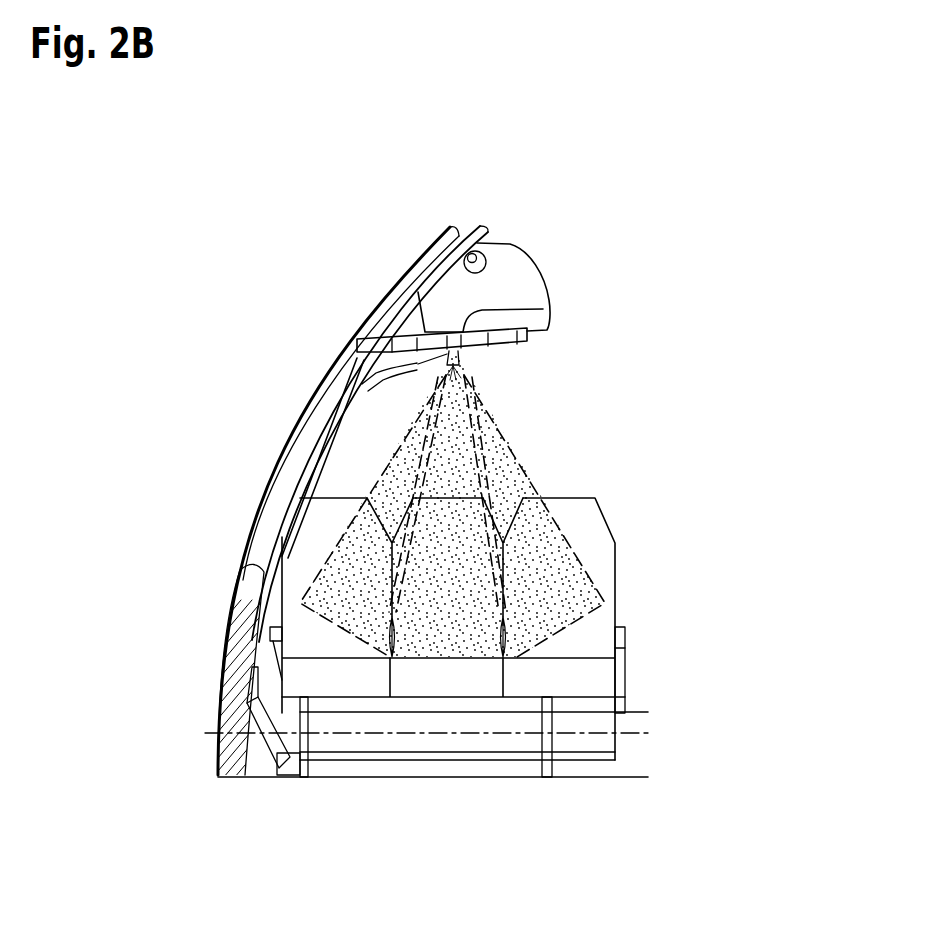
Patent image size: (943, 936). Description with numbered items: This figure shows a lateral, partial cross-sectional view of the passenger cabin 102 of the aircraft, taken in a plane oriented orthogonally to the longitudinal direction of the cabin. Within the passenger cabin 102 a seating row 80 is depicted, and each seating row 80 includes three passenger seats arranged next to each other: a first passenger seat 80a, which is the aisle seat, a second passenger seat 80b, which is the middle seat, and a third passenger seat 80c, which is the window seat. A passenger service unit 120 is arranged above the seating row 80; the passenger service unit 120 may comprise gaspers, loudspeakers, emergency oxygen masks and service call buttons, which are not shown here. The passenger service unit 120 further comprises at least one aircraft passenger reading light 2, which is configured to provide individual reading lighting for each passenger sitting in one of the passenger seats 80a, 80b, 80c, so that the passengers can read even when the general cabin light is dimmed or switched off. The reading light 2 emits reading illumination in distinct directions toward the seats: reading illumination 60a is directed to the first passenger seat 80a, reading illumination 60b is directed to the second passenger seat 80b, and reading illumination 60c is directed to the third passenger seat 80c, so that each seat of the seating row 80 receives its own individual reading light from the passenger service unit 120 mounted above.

The passenger cabin 102 is at (293, 290).
The aircraft passenger reading light 2 is at (500, 312).
The passenger service unit 120 is at (496, 370).
The reading illumination 60a is at (508, 465).
The reading illumination 60b is at (455, 450).
The reading illumination 60c is at (343, 546).
The third passenger seat 80c is at (345, 492).
The first passenger seat 80a is at (630, 484).
The second passenger seat 80b is at (445, 680).
The seating row 80 is at (655, 524).